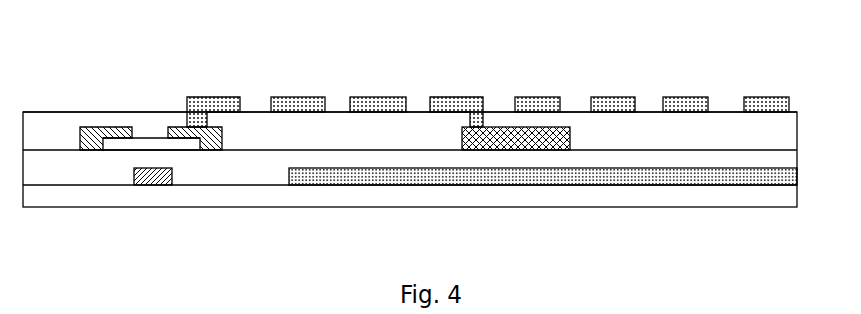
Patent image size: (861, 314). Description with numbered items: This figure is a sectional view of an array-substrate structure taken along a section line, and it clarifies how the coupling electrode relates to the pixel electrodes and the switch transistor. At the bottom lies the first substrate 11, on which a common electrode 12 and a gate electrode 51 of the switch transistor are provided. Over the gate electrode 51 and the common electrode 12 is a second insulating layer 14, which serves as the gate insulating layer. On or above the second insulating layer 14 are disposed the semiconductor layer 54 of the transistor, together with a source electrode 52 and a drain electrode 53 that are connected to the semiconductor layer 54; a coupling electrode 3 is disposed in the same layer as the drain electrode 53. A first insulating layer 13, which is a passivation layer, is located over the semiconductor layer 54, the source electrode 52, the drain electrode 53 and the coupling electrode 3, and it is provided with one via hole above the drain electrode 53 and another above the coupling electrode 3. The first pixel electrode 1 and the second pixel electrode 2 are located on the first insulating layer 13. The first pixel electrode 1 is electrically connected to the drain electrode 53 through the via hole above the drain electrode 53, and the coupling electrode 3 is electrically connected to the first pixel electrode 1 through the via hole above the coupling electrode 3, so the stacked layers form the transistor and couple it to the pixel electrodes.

The first pixel electrode 1 is at (467, 103).
The second pixel electrode 2 is at (765, 110).
The coupling electrode 3 is at (500, 122).
The first substrate 11 is at (221, 193).
The common electrode 12 is at (457, 176).
The first insulating layer 13 is at (623, 139).
The second insulating layer 14 is at (757, 157).
The gate electrode 51 is at (152, 185).
The source electrode 52 is at (92, 126).
The drain electrode 53 is at (172, 130).
The semiconductor layer 54 is at (131, 148).